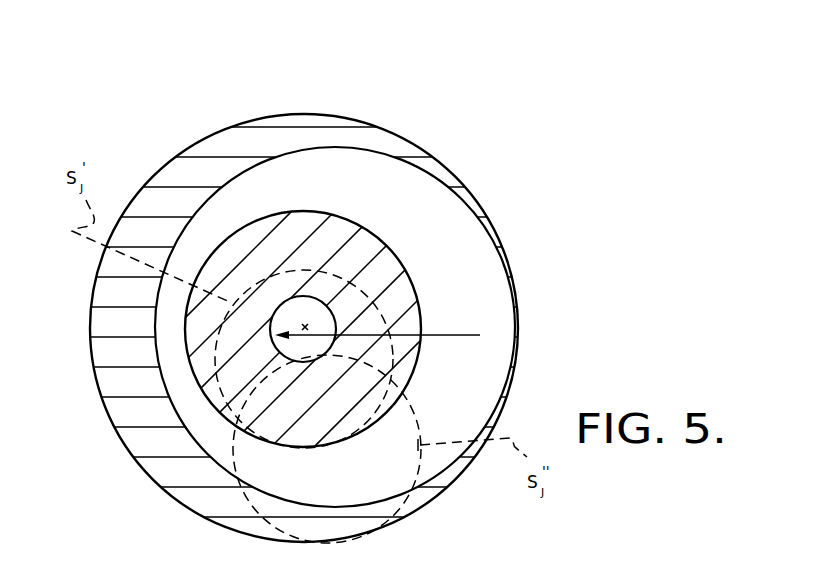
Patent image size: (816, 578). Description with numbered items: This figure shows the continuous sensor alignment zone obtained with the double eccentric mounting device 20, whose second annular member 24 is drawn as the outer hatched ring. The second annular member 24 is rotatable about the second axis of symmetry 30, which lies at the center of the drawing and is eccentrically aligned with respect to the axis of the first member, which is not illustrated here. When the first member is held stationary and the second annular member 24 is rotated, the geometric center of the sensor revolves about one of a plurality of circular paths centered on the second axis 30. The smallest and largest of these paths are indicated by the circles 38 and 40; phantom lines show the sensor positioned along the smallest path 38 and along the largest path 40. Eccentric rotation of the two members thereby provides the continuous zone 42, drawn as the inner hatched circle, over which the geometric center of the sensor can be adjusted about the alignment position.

The double eccentric mounting device 20 is at (482, 170).
The second annular member 24 is at (342, 115).
The second axis of symmetry 30 is at (307, 327).
The smallest path of revolution 38 is at (480, 335).
The largest path of revolution 40 is at (190, 348).
The continuous zone 42 is at (232, 252).